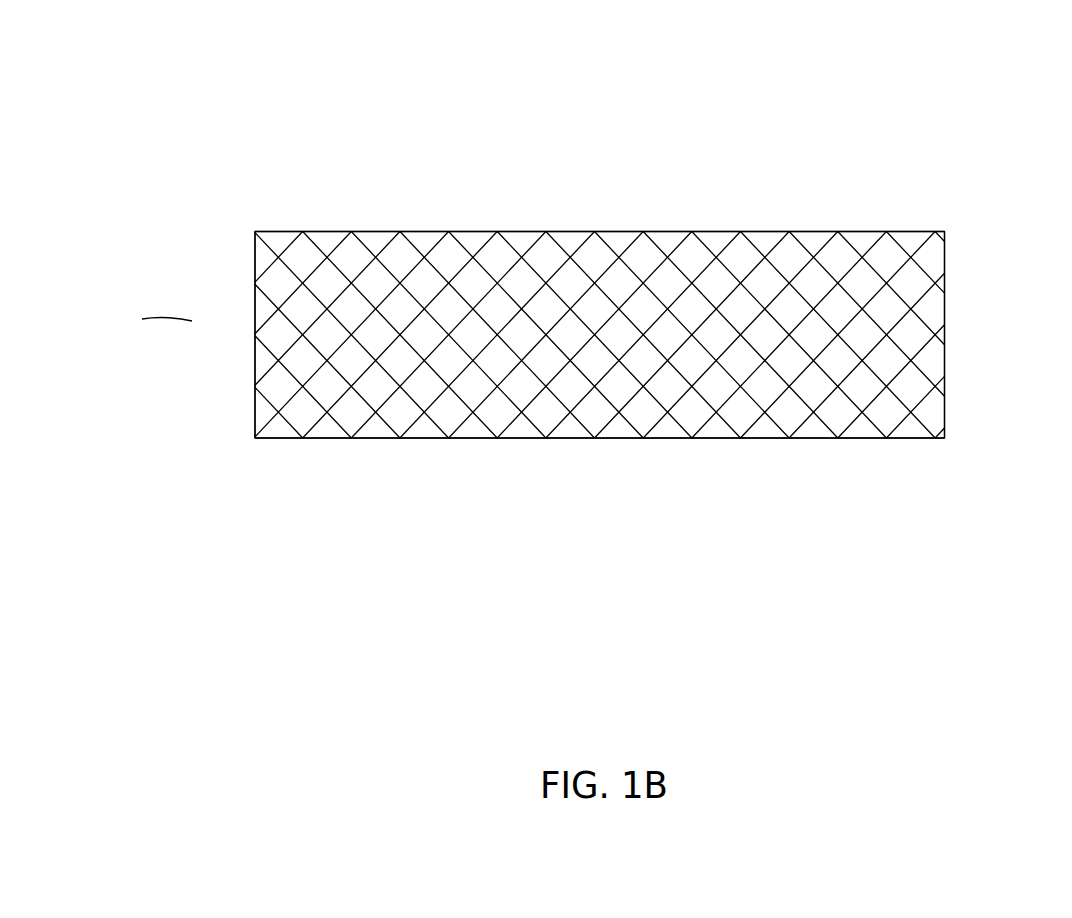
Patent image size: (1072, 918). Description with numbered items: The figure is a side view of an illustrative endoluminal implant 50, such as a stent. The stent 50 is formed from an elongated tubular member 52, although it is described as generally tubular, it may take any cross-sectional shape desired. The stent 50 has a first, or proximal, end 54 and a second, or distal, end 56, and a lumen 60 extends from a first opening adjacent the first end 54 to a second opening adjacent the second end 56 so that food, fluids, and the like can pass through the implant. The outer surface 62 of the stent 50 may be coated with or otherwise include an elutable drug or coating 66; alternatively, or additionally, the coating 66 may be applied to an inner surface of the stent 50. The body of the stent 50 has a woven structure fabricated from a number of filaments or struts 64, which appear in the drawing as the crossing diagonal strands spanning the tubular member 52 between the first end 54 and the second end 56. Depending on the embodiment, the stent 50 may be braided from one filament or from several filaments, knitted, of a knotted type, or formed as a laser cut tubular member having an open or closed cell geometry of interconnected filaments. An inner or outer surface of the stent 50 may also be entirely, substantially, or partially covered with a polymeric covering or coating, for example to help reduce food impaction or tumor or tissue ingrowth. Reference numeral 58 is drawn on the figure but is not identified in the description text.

The endoluminal implant 50 is at (605, 261).
The elongated tubular member 52 is at (763, 232).
The first end 54 is at (256, 232).
The second end 56 is at (945, 250).
The top surface 58 is at (423, 232).
The lumen 60 is at (163, 319).
The outer surface 62 is at (810, 438).
The filaments or struts 64 is at (605, 248).
The elutable drug or coating 66 is at (908, 327).